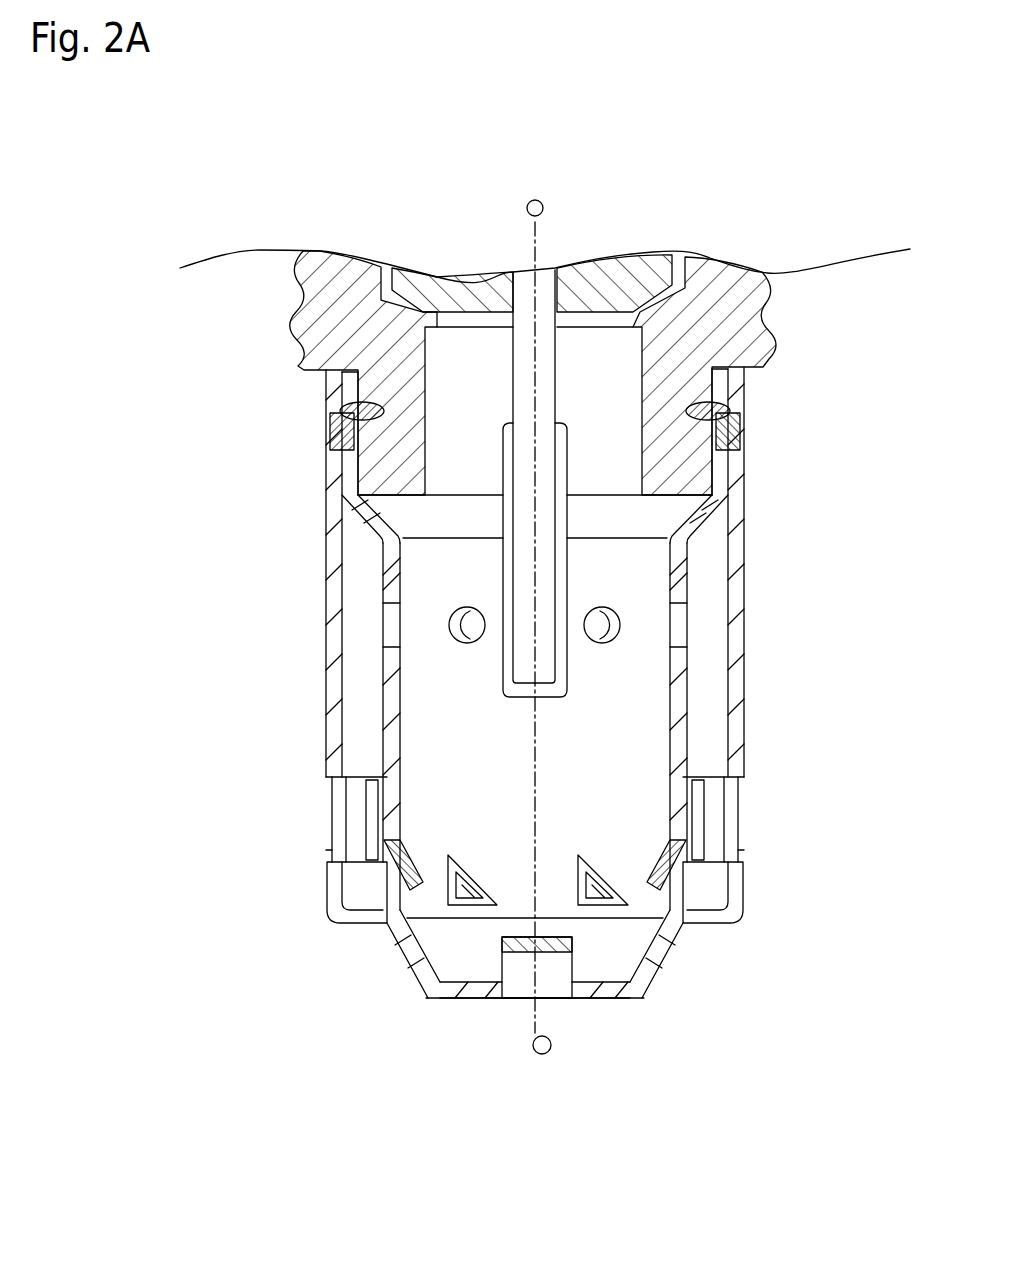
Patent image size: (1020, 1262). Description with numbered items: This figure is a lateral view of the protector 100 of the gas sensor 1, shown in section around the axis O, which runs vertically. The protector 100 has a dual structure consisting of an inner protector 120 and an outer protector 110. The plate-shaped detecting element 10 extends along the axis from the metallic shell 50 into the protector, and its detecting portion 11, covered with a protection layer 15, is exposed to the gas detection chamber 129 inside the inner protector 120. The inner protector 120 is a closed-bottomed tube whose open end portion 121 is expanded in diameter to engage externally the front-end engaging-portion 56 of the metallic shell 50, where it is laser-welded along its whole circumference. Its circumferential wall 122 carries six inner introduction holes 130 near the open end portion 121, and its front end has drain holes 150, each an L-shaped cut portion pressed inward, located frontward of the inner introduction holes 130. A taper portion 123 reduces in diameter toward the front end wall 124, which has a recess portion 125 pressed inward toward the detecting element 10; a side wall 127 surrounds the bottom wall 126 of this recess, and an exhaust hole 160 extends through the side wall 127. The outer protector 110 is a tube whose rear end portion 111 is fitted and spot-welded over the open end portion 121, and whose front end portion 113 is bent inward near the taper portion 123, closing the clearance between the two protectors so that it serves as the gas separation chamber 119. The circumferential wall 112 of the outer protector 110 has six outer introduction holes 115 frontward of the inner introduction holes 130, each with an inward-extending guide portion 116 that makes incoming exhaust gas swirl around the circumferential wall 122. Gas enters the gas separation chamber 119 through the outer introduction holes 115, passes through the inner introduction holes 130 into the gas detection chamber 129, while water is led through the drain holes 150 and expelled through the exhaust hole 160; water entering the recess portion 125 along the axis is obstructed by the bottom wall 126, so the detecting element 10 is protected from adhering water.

The gas sensor 1 is at (822, 218).
The metallic shell 50 is at (800, 325).
The detecting element 10 is at (552, 476).
The front-end engaging-portion 56 is at (690, 455).
The rear end portion 111 is at (337, 462).
The open end portion 121 is at (334, 474).
The gas separation chamber 119 is at (366, 582).
The detecting portion 11 is at (522, 578).
The protection layer 15 is at (505, 598).
The inner introduction holes 130 is at (453, 627).
The circumferential wall 122 is at (383, 703).
The circumferential wall 112 is at (332, 747).
The guide portion 116 is at (368, 818).
The outer introduction holes 115 is at (330, 848).
The drain holes 150 is at (420, 870).
The front end portion 113 is at (367, 923).
The taper portion 123 is at (413, 957).
The front end wall 124 is at (477, 993).
The recess portion 125 is at (517, 1010).
The bottom wall 126 is at (543, 947).
The side wall 127 is at (589, 1022).
The exhaust hole 160 is at (498, 967).
The gas detection chamber 129 is at (600, 737).
The outer protector 110 is at (532, 696).
The inner protector 120 is at (518, 747).
The protector 100 is at (851, 1016).